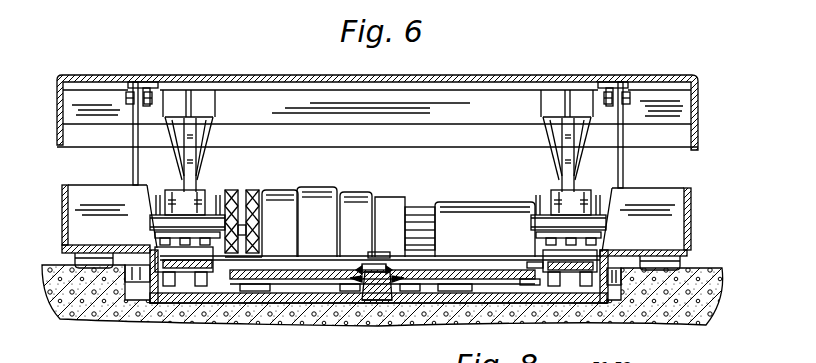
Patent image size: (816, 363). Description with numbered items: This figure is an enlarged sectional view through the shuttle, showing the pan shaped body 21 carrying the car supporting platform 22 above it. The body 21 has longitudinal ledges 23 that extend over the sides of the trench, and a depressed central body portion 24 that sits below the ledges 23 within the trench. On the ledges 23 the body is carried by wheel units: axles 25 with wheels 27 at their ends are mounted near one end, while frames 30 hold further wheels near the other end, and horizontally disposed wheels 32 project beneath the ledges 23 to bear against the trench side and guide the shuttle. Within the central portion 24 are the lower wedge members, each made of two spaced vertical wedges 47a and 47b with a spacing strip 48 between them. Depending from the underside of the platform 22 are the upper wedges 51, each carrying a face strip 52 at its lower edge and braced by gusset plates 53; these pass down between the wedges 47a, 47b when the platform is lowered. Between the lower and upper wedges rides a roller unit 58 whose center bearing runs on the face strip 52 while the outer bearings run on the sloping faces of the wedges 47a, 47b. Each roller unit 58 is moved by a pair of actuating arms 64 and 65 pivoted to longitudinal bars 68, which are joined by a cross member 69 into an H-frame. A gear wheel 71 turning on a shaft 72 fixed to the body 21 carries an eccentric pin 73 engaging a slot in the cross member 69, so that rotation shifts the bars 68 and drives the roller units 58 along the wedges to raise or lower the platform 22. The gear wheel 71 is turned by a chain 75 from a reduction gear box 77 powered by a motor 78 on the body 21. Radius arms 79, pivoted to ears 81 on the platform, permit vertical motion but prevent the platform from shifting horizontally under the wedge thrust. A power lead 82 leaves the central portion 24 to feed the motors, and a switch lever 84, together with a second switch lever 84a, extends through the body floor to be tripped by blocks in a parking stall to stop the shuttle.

The pan shaped body 21 is at (62, 222).
The car supporting platform 22 is at (341, 77).
The longitudinal ledges 23 is at (128, 248).
The central body portion 24 is at (310, 300).
The axles 25 is at (600, 235).
The wheels 27 is at (80, 181).
The frames 30 is at (382, 135).
The horizontally disposed wheels 32 is at (143, 280).
The vertical wedge 47a is at (213, 287).
The vertical wedge 47b is at (163, 270).
The spacing strip 48 is at (196, 288).
The upper wedges 51 is at (214, 106).
The face strip 52 is at (210, 156).
The gusset plates 53 is at (215, 132).
The roller unit 58 is at (175, 188).
The actuating arm 64 is at (218, 200).
The actuating arm 65 is at (155, 200).
The longitudinal bars 68 is at (188, 285).
The cross member 69 is at (450, 265).
The gear wheel 71 is at (305, 275).
The shaft 72 is at (372, 270).
The eccentric pin 73 is at (381, 258).
The chain 75 is at (517, 266).
The reduction gear box 77 is at (480, 228).
The motor 78 is at (330, 228).
The radius arms 79 is at (132, 133).
The ears 81 is at (145, 107).
The power lead 82 is at (660, 312).
The switch lever 84 is at (365, 298).
The second switch lever 84a is at (380, 296).